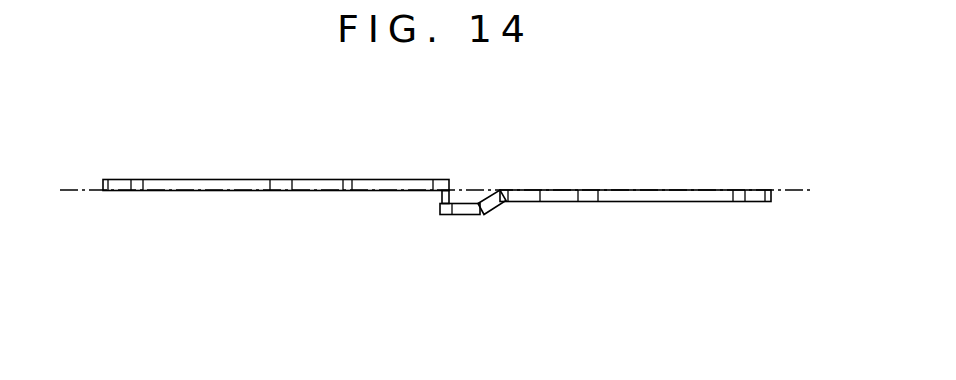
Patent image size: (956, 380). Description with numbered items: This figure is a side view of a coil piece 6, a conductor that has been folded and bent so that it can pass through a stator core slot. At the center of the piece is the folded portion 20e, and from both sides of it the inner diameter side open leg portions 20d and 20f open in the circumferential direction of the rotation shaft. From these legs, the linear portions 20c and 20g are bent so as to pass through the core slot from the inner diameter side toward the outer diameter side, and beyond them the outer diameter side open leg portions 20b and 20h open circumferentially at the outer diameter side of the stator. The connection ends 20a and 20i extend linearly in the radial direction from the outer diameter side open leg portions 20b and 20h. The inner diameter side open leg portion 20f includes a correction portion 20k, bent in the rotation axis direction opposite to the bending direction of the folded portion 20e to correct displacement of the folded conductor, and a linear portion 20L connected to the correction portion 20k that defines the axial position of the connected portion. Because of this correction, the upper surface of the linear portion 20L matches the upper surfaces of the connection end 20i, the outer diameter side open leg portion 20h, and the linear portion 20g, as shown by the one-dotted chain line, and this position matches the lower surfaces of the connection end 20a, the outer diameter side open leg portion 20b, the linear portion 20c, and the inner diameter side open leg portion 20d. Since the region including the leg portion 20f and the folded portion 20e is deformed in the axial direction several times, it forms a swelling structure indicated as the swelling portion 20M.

The coil piece 6 is at (158, 233).
The connection end 20a is at (116, 183).
The outer diameter side open leg portion 20b is at (204, 183).
The linear portion 20c is at (310, 183).
The inner diameter side open leg portion 20d is at (393, 183).
The folded portion 20e is at (438, 199).
The inner diameter side open leg portion 20f is at (453, 169).
The linear portion 20g is at (556, 194).
The outer diameter side open leg portion 20h is at (635, 194).
The connection end 20i is at (748, 194).
The correction portion 20k is at (489, 210).
The linear portion 20L is at (514, 201).
The swelling portion 20M is at (423, 118).